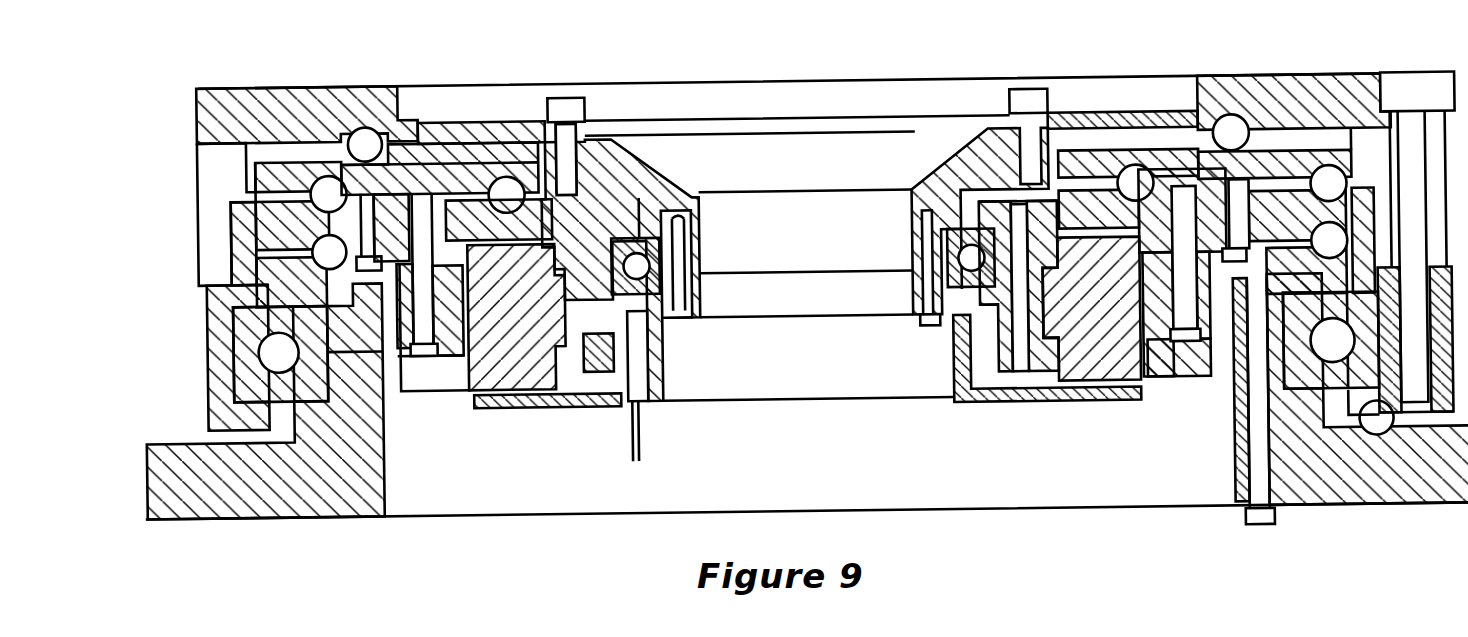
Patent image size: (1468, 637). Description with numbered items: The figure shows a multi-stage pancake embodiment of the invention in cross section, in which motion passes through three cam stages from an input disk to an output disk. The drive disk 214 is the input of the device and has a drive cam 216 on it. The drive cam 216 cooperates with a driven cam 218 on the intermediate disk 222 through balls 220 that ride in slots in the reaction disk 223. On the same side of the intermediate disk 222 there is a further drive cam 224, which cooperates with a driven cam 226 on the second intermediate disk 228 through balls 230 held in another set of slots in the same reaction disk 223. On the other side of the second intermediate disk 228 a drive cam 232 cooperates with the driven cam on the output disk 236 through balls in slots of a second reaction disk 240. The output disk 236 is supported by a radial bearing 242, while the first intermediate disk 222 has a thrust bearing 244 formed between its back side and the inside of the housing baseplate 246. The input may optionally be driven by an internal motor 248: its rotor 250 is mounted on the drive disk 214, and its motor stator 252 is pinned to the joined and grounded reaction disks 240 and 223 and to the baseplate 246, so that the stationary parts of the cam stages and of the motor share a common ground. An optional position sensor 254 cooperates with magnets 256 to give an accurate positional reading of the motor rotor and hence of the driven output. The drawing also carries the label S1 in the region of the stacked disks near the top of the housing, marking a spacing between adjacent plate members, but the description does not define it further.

The drive disk 214 is at (652, 177).
The drive cam 216 is at (530, 138).
The driven cam 218 is at (493, 160).
The balls 220 is at (508, 188).
The intermediate disk 222 is at (430, 175).
The reaction disk 223 is at (213, 177).
The drive cam 224 is at (297, 170).
The driven cam 226 is at (234, 107).
The second intermediate disk 228 is at (278, 232).
The balls 230 is at (332, 190).
The drive cam 232 is at (358, 244).
The output disk 236 is at (277, 287).
The reaction disk 240 is at (243, 252).
The radial bearing 242 is at (270, 353).
The thrust bearing 244 is at (367, 137).
The housing baseplate 246 is at (1277, 87).
The internal motor 248 is at (495, 392).
The rotor 250 is at (525, 380).
The motor stator 252 is at (445, 335).
The position sensor 254 is at (637, 362).
The magnets 256 is at (598, 352).
The gap S1 is at (481, 117).